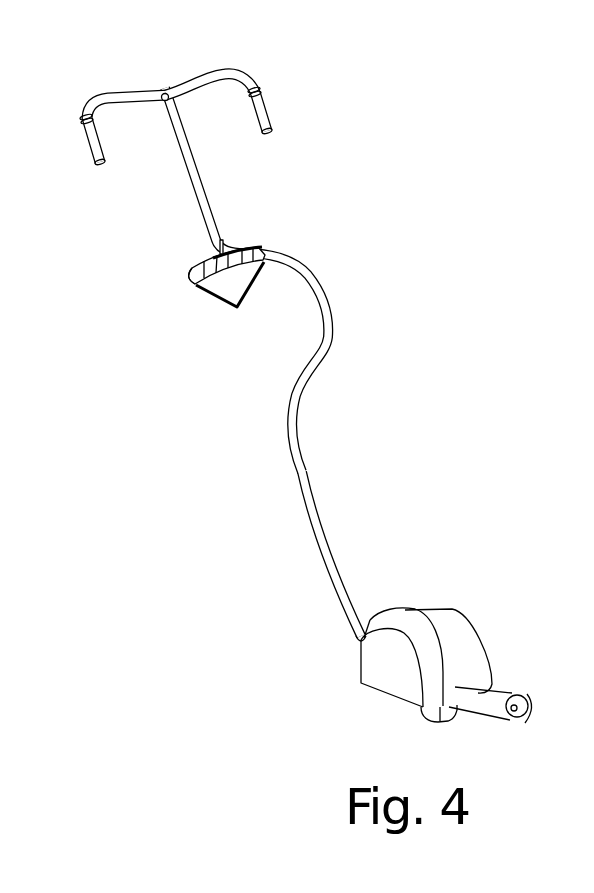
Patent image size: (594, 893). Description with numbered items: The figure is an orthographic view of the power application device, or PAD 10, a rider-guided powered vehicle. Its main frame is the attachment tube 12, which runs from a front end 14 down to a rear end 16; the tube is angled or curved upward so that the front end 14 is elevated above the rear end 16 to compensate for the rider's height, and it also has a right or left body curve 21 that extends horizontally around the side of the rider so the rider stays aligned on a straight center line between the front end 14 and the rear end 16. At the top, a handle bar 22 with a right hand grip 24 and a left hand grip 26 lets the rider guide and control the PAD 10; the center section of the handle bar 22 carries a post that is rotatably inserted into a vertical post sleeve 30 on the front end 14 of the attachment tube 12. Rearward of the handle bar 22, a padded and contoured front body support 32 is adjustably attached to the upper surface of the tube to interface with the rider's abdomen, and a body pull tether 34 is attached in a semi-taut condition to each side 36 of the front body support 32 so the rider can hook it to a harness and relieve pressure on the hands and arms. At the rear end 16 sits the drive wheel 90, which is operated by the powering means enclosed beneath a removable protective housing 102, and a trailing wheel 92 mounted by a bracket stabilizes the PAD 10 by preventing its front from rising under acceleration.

The power application device 10 is at (291, 392).
The attachment tube 12 is at (288, 362).
The front end 14 is at (160, 108).
The rear end 16 is at (371, 626).
The body curve 21 is at (324, 308).
The handle bar 22 is at (112, 93).
The right hand grip 24 is at (262, 99).
The left hand grip 26 is at (95, 148).
The vertical post sleeve 30 is at (168, 94).
The front body support 32 is at (192, 267).
The body pull tether 34 is at (236, 312).
The side 36 is at (195, 286).
The drive wheel 90 is at (450, 713).
The trailing wheel 92 is at (530, 712).
The protective housing 102 is at (393, 676).